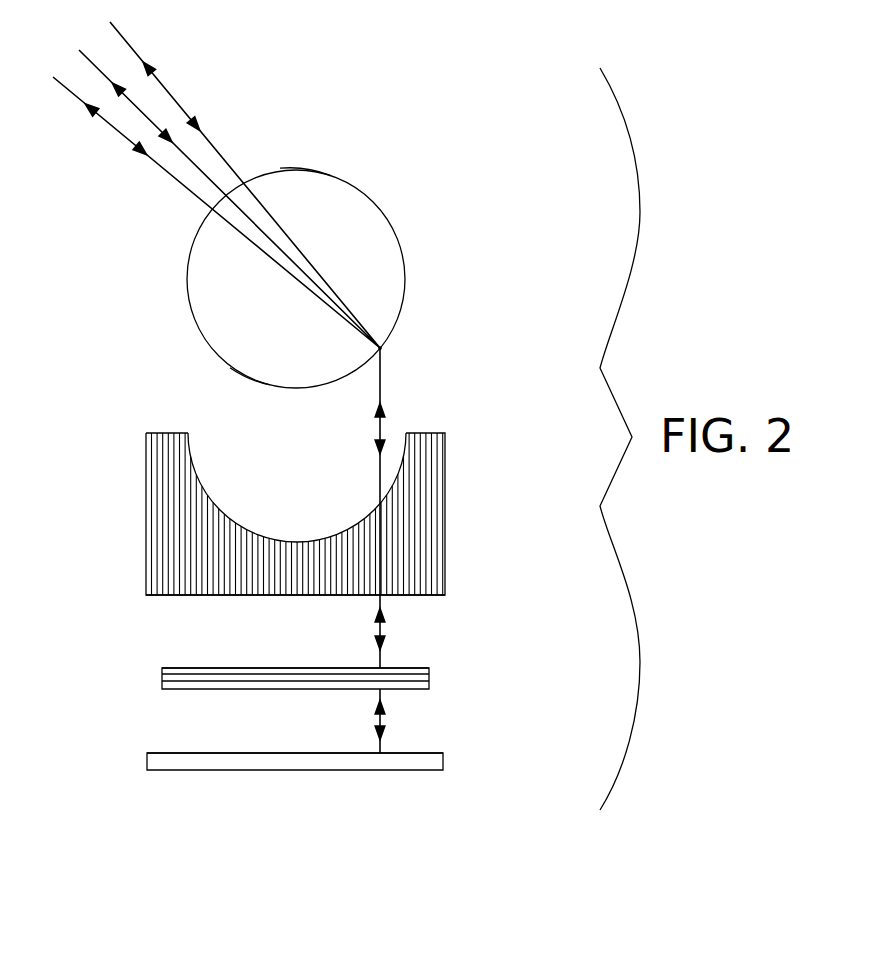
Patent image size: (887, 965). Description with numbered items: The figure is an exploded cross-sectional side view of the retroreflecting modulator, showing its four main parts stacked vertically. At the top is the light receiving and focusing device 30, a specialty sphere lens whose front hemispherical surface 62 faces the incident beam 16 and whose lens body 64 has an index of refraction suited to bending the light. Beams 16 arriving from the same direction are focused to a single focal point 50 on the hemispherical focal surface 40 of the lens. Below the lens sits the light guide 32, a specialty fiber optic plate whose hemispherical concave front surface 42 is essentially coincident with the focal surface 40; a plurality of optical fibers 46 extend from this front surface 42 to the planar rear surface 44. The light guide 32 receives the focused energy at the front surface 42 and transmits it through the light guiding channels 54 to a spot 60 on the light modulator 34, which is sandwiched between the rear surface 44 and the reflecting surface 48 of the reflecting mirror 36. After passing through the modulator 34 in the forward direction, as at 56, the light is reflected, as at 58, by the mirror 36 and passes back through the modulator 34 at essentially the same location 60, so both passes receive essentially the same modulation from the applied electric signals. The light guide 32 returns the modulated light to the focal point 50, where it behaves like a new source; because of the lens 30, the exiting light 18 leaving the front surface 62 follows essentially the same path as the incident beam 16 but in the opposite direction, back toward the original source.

The incident beam 16 is at (173, 141).
The exiting light 18 is at (115, 83).
The light receiving and focusing device 30 is at (387, 205).
The light guide 32 is at (445, 518).
The light modulator 34 is at (430, 680).
The reflecting mirror 36 is at (443, 758).
The focal surface 40 is at (246, 370).
The front surface 42 is at (226, 514).
The rear surface 44 is at (192, 597).
The optical fibers 46 is at (417, 560).
The reflecting surface 48 is at (168, 753).
The focal point 50 is at (383, 348).
The light guiding channels 54 is at (386, 570).
The forward pass through modulator 56 is at (378, 668).
The reflection 58 is at (383, 708).
The spot on light modulator 60 is at (380, 669).
The front hemispherical surface 62 is at (313, 170).
The lens body 64 is at (358, 253).